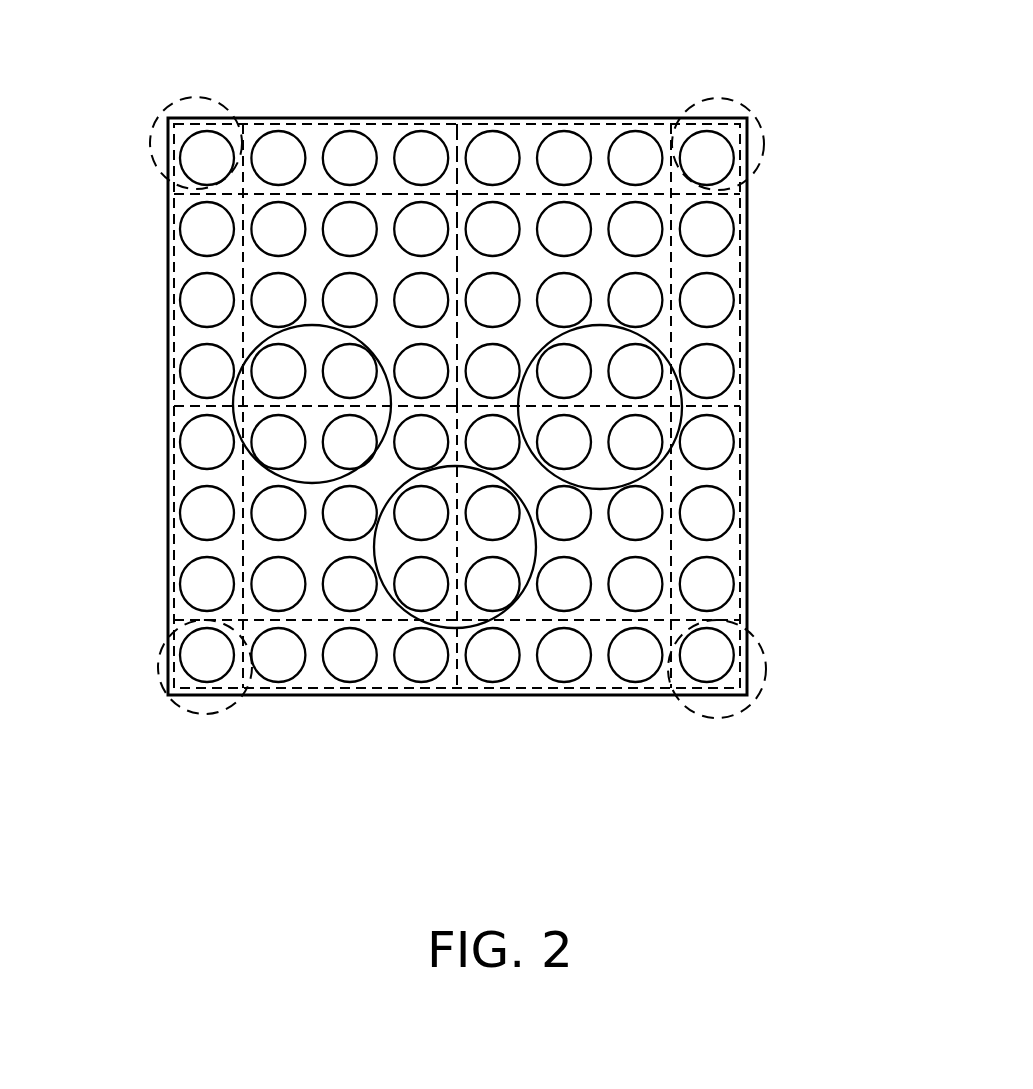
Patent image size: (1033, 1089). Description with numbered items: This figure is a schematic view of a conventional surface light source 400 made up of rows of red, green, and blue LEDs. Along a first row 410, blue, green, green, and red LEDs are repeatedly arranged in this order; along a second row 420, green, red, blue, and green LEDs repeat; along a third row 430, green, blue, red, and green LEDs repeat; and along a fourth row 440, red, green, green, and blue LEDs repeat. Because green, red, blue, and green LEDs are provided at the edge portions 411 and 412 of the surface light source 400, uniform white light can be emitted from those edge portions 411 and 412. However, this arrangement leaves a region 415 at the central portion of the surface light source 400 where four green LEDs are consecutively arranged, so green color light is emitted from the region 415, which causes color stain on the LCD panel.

The surface light source 400 is at (471, 64).
The first row 410 is at (783, 158).
The second row 420 is at (783, 219).
The third row 430 is at (783, 295).
The fourth row 440 is at (783, 366).
The edge portion 411 is at (162, 125).
The edge portion 412 is at (757, 690).
The region 415 is at (240, 406).